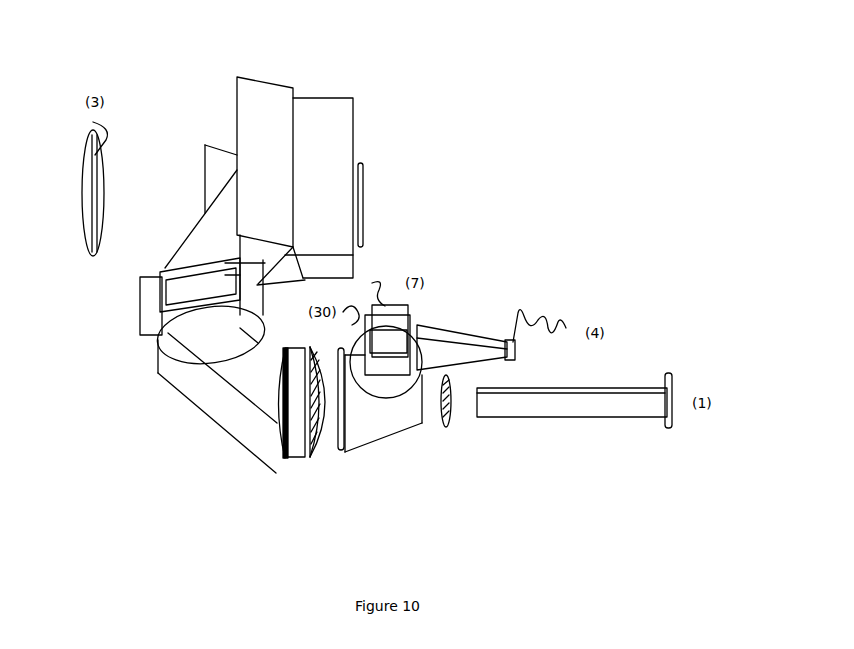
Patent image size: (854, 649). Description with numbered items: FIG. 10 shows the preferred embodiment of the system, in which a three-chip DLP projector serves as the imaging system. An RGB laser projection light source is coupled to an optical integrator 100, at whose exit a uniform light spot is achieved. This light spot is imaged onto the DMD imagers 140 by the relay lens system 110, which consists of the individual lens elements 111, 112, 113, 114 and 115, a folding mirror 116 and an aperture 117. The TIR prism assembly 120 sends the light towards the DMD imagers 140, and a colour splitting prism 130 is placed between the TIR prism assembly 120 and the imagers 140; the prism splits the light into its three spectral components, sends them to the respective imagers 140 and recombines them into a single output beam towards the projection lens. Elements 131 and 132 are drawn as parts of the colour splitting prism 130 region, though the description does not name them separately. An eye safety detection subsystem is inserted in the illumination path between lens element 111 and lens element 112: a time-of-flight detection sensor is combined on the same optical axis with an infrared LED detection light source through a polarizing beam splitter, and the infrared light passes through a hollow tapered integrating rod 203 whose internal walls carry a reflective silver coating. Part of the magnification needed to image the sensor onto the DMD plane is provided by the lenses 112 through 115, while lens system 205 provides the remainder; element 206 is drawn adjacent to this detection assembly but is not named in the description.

The optical integrator 100 is at (583, 400).
The relay lens system 110 is at (476, 488).
The lens element 111 is at (449, 428).
The lens element 112 is at (330, 455).
The lens element 113 is at (300, 420).
The lens element 114 is at (278, 420).
The lens element 115 is at (262, 341).
The folding mirror 116 is at (221, 431).
The aperture 117 is at (343, 453).
The TIR prism assembly 120 is at (235, 123).
The colour splitting prism 130 is at (353, 68).
The light source 131 is at (265, 162).
The light source 132 is at (305, 191).
The DMD imagers 140 is at (366, 214).
The hollow tapered integrating rod 203 is at (427, 323).
The lens system 205 is at (348, 383).
The camera housing 206 is at (393, 435).